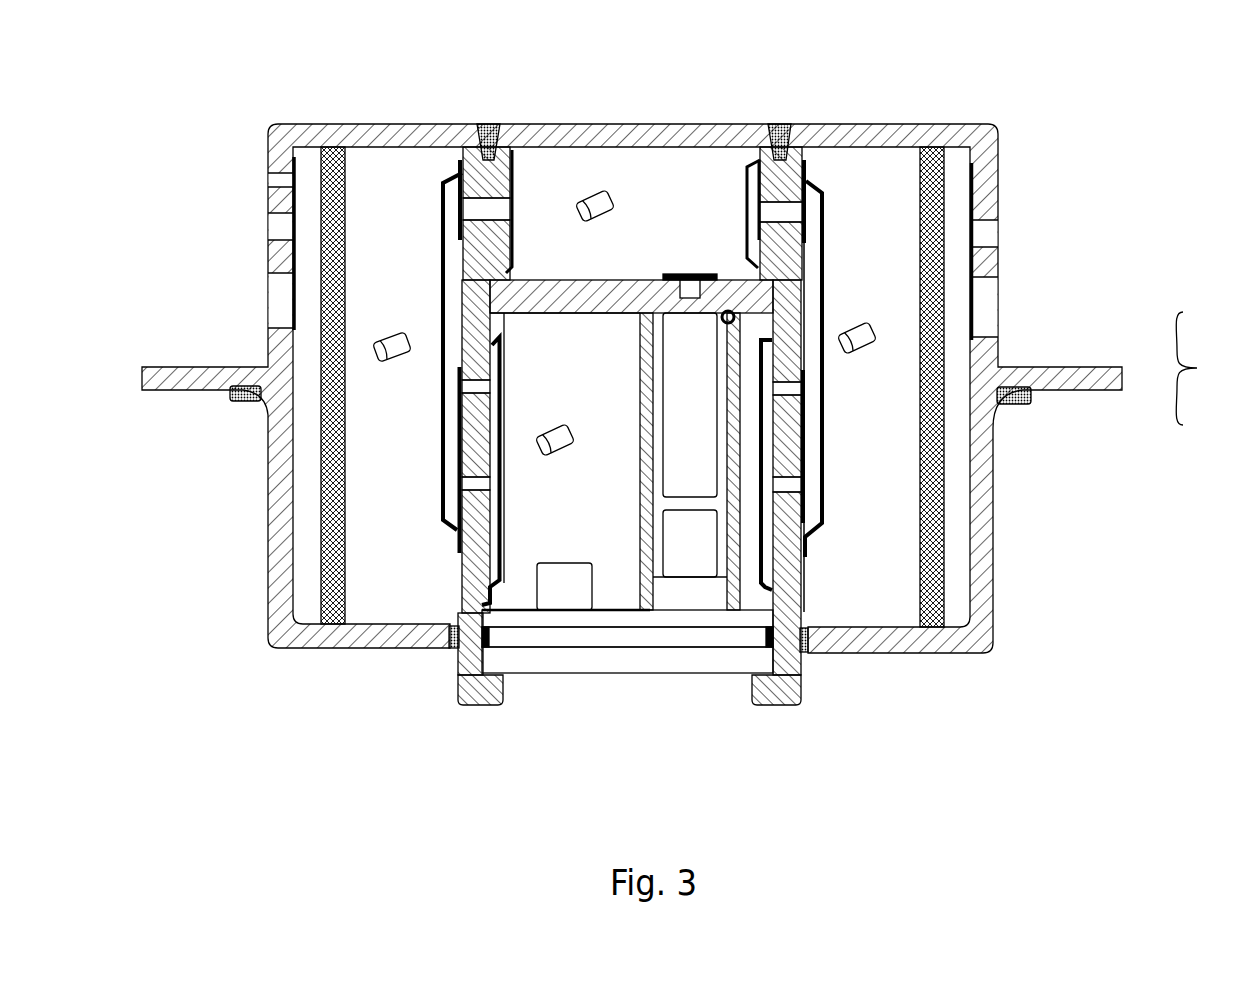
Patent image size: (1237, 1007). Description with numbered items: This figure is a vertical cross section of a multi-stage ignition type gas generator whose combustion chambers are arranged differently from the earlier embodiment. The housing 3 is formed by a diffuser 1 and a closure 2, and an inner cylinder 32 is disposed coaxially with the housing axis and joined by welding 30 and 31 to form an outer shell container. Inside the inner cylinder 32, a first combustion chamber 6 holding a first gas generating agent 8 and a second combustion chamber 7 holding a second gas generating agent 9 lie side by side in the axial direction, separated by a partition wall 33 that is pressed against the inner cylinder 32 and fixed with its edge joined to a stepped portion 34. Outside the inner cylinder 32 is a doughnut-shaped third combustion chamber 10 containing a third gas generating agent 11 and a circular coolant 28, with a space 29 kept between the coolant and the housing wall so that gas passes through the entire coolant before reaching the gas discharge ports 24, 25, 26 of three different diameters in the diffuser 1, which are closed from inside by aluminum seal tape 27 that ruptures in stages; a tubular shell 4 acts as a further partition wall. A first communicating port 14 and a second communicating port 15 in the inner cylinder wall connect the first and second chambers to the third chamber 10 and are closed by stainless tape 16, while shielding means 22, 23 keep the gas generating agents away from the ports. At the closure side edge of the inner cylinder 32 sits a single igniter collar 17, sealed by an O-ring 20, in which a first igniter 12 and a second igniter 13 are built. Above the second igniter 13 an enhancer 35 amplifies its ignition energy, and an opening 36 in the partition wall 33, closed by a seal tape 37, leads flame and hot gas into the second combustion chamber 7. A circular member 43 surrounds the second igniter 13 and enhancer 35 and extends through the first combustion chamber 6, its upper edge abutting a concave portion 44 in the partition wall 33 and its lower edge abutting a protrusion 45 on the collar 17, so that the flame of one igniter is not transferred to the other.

The diffuser 1 is at (1097, 372).
The closure 2 is at (1027, 420).
The housing 3 is at (1201, 368).
The tubular shell 4 is at (862, 358).
The first combustion chamber 6 is at (626, 498).
The second combustion chamber 7 is at (714, 205).
The first gas generating agent 8 is at (558, 458).
The second gas generating agent 9 is at (593, 190).
The third combustion chamber 10 is at (403, 462).
The third gas generating agent 11 is at (386, 332).
The first igniter 12 is at (585, 605).
The second igniter 13 is at (708, 562).
The first communicating port 14 is at (470, 478).
The second communicating port 15 is at (513, 215).
The stainless tape 16 is at (444, 183).
The igniter collar 17 is at (633, 660).
The O-ring 20 is at (757, 650).
The shielding means 22 is at (827, 213).
The shielding means 23 is at (747, 190).
The gas discharge port 24 is at (987, 310).
The gas discharge port 25 is at (990, 233).
The gas discharge port 26 is at (990, 185).
The aluminum seal tape 27 is at (632, 337).
The coolant 28 is at (963, 182).
The space 29 is at (307, 162).
The welding 30 is at (250, 400).
The welding 31 is at (803, 655).
The inner cylinder 32 is at (790, 592).
The partition wall 33 is at (537, 315).
The stepped portion 34 is at (540, 279).
The enhancer 35 is at (712, 385).
The opening 36 is at (672, 290).
The seal tape 37 is at (693, 274).
The circular member 43 is at (800, 540).
The concave portion 44 is at (742, 318).
The protrusion 45 is at (722, 597).